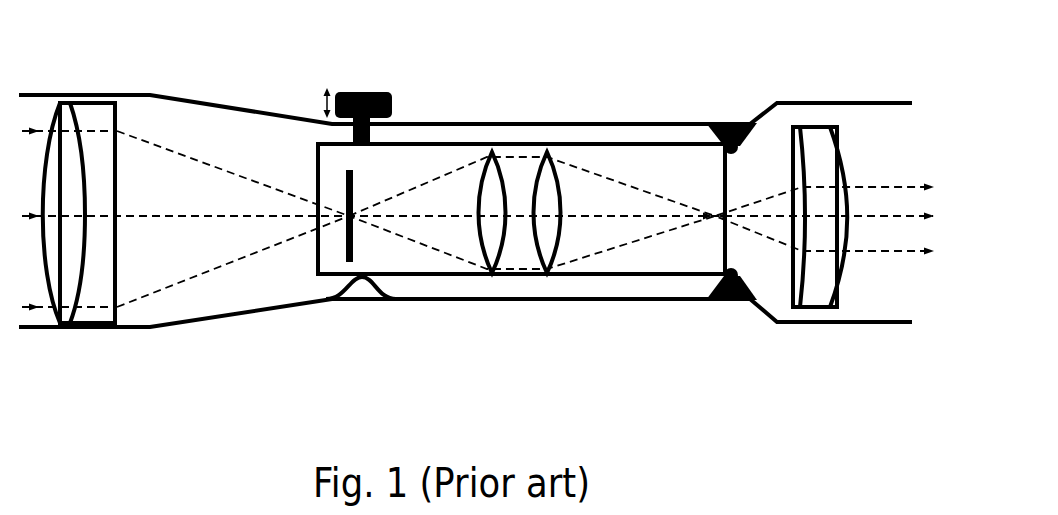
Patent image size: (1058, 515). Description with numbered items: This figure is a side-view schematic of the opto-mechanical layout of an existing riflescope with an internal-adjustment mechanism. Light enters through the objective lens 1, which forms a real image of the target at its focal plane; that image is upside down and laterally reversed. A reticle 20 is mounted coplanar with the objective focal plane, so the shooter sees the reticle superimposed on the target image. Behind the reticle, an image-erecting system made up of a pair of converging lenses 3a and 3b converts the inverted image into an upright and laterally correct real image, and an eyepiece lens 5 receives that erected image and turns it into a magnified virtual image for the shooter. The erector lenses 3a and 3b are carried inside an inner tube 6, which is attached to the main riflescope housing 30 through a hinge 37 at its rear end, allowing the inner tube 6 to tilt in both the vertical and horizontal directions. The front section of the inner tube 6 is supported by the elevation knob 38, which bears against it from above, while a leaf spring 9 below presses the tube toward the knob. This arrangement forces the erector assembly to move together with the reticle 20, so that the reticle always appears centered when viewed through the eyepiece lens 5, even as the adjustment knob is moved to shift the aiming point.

The objective lens 1 is at (118, 302).
The main riflescope housing 30 is at (180, 98).
The elevation knob 38 is at (368, 92).
The inner tube 6 is at (433, 143).
The hinge 37 is at (720, 140).
The reticle 20 is at (355, 238).
The leaf spring 9 is at (378, 297).
The converging lens 3a is at (510, 275).
The converging lens 3b is at (567, 275).
The eyepiece lens 5 is at (840, 270).